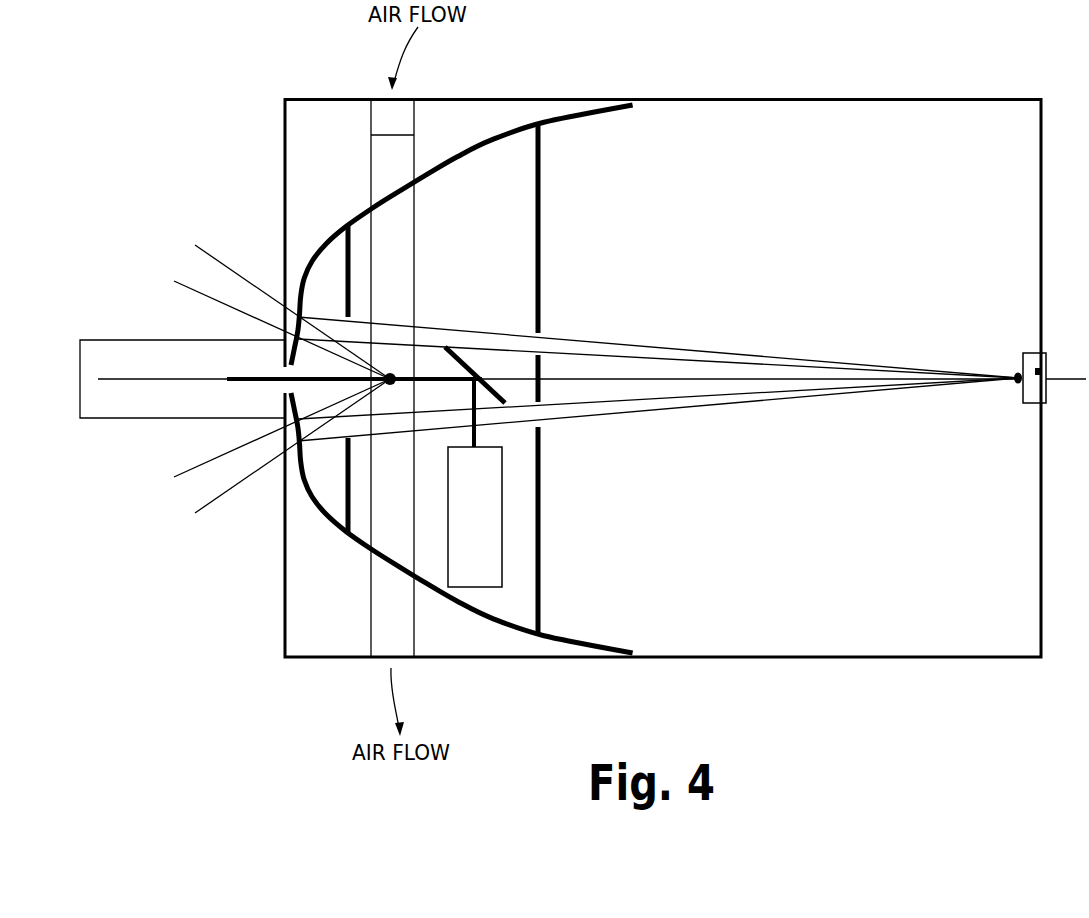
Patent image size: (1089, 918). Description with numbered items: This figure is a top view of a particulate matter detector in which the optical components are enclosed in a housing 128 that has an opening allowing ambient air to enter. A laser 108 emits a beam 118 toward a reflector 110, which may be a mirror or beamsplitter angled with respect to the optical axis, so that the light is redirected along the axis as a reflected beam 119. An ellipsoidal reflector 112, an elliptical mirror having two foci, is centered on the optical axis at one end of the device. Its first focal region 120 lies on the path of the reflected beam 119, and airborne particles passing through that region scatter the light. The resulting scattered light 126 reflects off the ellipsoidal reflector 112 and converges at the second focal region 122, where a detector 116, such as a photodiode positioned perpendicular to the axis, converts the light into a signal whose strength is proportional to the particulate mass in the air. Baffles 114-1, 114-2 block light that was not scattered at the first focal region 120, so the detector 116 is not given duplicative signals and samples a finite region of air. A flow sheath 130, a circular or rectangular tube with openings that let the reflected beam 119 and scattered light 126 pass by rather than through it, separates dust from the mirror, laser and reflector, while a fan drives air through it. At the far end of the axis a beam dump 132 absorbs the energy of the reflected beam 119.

The laser 108 is at (503, 532).
The reflector 110 is at (481, 370).
The ellipsoidal reflector 112 is at (514, 130).
The baffle 114-1 is at (347, 270).
The baffle 114-2 is at (543, 192).
The detector 116 is at (1030, 353).
The beam 118 is at (477, 438).
The reflected beam 119 is at (433, 376).
The first focal region 120 is at (384, 405).
The second focal region 122 is at (1005, 349).
The scattered light 126 is at (756, 430).
The housing 128 is at (950, 97).
The flow sheath 130 is at (380, 613).
The beam dump 132 is at (115, 340).